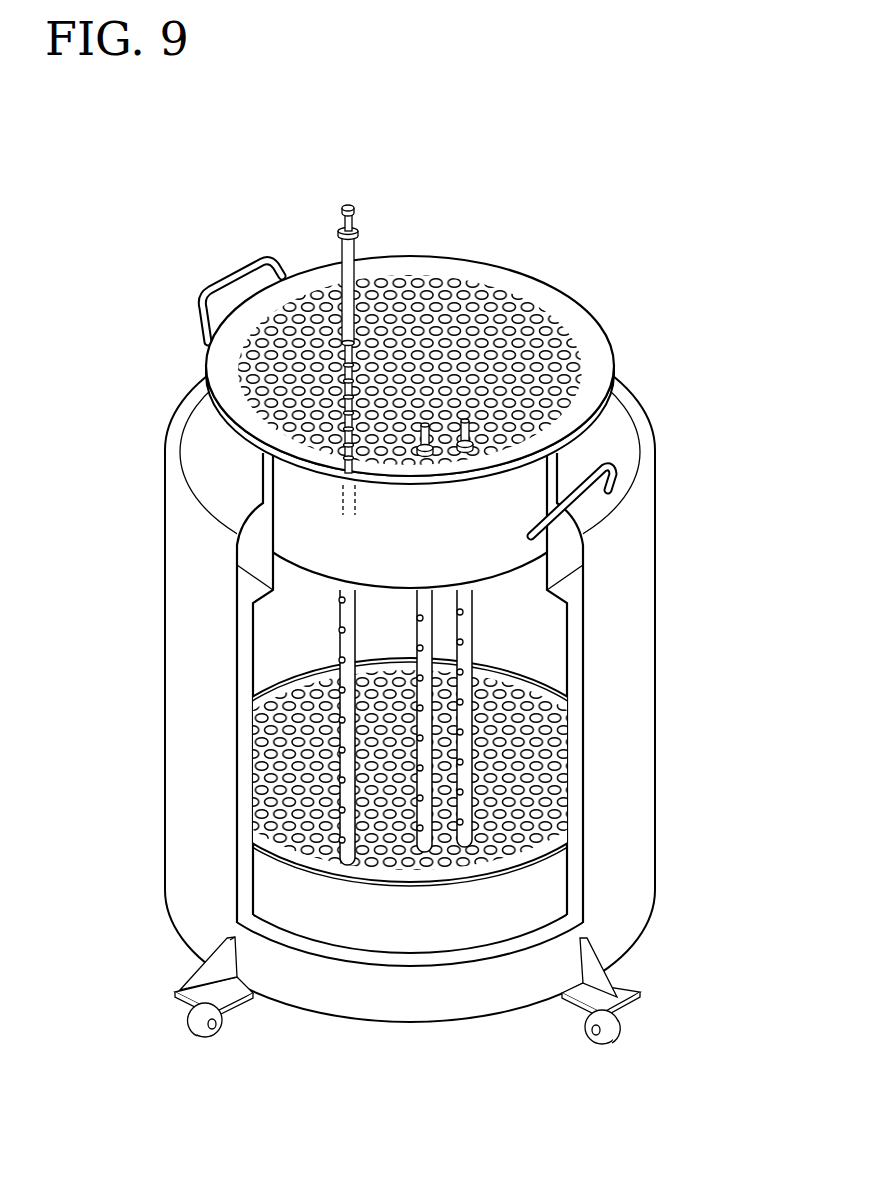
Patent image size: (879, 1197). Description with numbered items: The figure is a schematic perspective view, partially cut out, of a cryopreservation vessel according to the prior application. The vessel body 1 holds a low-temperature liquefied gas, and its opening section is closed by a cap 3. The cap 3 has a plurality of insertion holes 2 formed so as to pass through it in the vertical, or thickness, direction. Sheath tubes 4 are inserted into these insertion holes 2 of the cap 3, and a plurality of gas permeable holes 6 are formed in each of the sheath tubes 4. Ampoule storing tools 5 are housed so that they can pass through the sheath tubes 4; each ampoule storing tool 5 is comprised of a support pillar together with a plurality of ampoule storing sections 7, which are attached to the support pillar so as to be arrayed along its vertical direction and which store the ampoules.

The vessel body 1 is at (617, 715).
The insertion holes 2 is at (500, 296).
The cap 3 is at (475, 538).
The sheath tubes 4 is at (345, 645).
The ampoule storing tools 5 is at (350, 252).
The gas permeable holes 6 is at (460, 613).
The ampoule storing sections 7 is at (347, 462).